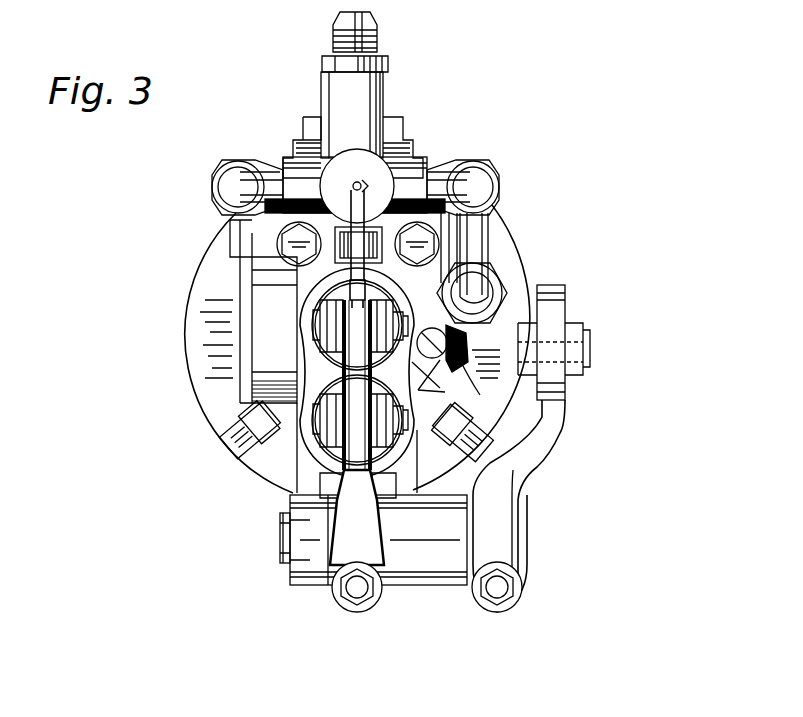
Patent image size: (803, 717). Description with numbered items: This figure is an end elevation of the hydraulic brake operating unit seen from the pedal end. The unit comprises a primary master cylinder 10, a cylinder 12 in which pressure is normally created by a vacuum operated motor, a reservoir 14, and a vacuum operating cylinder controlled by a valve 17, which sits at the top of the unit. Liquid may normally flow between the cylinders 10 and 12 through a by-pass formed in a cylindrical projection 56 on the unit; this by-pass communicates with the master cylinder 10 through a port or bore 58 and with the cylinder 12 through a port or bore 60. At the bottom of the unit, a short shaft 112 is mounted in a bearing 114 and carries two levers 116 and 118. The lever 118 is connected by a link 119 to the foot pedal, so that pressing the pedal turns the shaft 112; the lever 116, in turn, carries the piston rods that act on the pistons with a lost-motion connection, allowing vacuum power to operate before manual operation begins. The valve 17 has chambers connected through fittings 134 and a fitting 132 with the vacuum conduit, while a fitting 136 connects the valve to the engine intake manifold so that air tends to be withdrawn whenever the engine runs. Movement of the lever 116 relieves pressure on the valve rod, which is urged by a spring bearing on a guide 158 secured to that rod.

The primary master cylinder 10 is at (318, 425).
The cylinder 12 is at (318, 332).
The reservoir 14 is at (470, 365).
The valve 17 is at (323, 148).
The cylindrical projection 56 is at (457, 392).
The port or bore 58 is at (468, 340).
The port or bore 60 is at (468, 390).
The short shaft 112 is at (282, 540).
The bearing 114 is at (428, 565).
The lever 116 is at (352, 535).
The lever 118 is at (520, 463).
The link 119 is at (570, 352).
The fitting 132 is at (237, 183).
The fittings 134 is at (476, 183).
The fitting 136 is at (380, 45).
The guide 158 is at (381, 182).